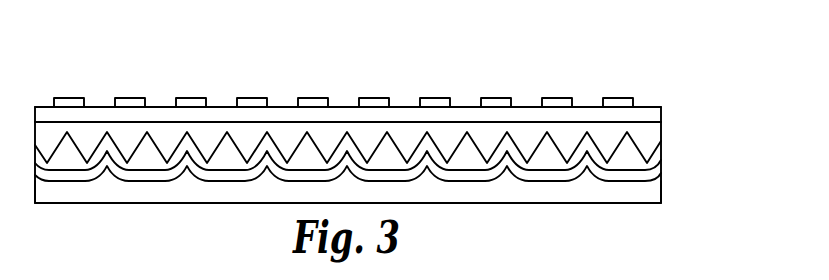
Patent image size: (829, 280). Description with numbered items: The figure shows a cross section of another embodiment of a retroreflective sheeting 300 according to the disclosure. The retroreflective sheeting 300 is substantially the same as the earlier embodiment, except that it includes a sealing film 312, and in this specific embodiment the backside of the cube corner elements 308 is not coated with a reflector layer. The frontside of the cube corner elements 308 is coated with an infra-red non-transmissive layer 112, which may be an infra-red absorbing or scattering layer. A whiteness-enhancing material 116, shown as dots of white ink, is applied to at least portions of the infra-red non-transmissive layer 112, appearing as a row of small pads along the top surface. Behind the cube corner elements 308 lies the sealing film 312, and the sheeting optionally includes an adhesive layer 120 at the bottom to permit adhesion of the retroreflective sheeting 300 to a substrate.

The retroreflective sheeting 300 is at (132, 64).
The infra-red non-transmissive layer 112 is at (653, 113).
The whiteness-enhancing material 116 is at (616, 98).
The cube corner elements 308 is at (652, 132).
The sealing film 312 is at (655, 174).
The adhesive layer 120 is at (652, 195).